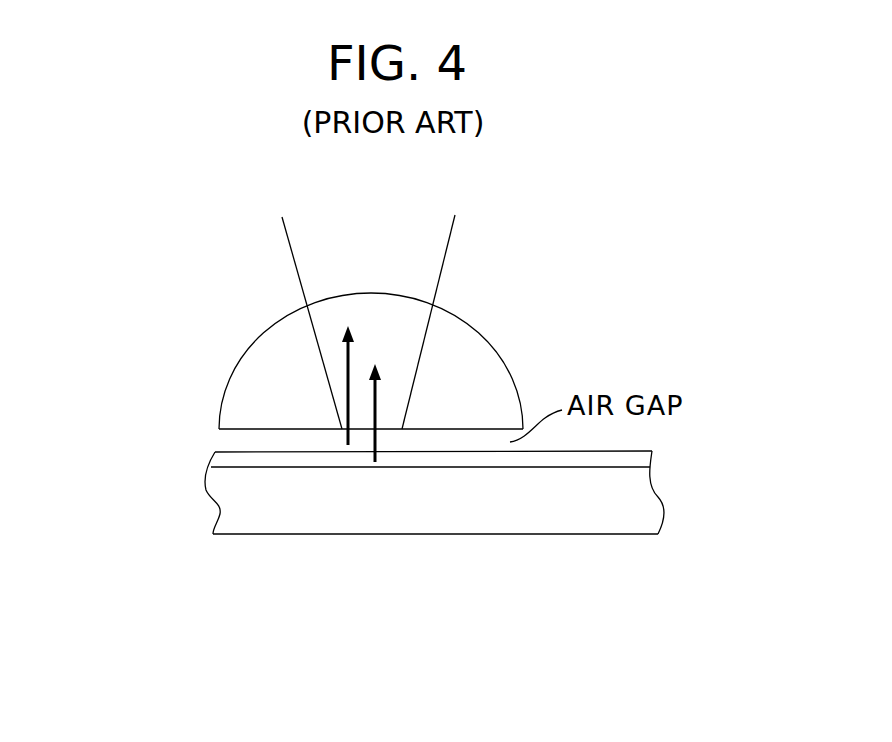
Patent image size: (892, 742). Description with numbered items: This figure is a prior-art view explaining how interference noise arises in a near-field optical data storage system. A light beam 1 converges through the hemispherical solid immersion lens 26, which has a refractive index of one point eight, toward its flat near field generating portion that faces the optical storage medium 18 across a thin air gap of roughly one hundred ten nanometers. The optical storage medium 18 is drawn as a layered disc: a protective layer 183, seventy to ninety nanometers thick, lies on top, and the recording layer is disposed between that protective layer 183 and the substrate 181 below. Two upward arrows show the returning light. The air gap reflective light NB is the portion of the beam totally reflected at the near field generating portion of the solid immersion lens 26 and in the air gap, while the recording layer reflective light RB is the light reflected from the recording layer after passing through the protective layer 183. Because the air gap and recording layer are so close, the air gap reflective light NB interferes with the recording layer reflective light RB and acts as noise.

The light beam 1 is at (448, 250).
The solid immersion lens 26 is at (505, 363).
The optical storage medium 18 is at (396, 492).
The protective layer 183 is at (225, 458).
The substrate 181 is at (492, 513).
The air gap reflective light NB is at (346, 374).
The recording layer reflective light RB is at (375, 399).